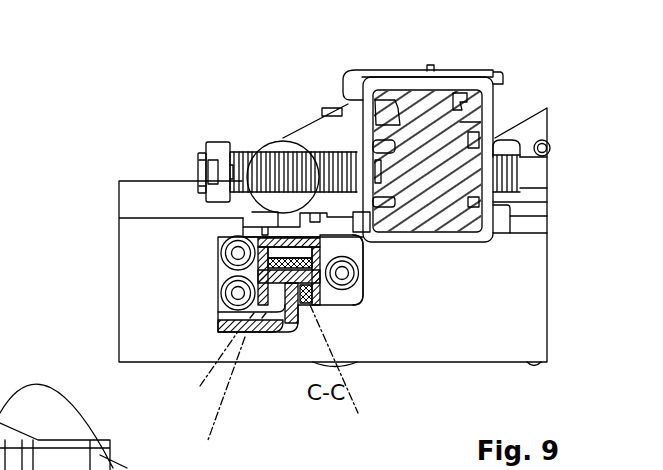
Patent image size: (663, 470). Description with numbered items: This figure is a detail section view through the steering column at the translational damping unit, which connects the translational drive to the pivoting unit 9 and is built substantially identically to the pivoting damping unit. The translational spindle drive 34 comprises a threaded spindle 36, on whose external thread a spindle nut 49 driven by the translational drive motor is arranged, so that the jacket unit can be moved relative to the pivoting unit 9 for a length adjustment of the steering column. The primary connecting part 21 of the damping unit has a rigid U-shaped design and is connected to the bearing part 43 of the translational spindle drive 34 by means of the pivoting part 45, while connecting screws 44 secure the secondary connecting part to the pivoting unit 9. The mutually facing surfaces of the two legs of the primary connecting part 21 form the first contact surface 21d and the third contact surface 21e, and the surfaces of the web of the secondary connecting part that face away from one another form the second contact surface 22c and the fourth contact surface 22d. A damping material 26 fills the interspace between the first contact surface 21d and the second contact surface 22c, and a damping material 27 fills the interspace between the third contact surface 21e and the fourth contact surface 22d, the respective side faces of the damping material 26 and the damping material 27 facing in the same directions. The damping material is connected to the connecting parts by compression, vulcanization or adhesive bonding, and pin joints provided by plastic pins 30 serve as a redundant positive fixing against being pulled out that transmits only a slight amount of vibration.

The pivoting unit 9 is at (333, 254).
The primary connecting part 21 is at (362, 275).
The first contact surface 21d is at (196, 380).
The third contact surface 21e is at (327, 305).
The second contact surface 22c is at (273, 327).
The fourth contact surface 22d is at (297, 333).
The damping material 26 is at (218, 400).
The damping material 27 is at (343, 370).
The pins 30 is at (270, 277).
The translational spindle drive 34 is at (475, 67).
The threaded spindle 36 is at (268, 148).
The bearing part 43 is at (483, 103).
The connecting screws 44 is at (228, 247).
The pivoting part 45 is at (199, 175).
The spindle nut 49 is at (453, 177).